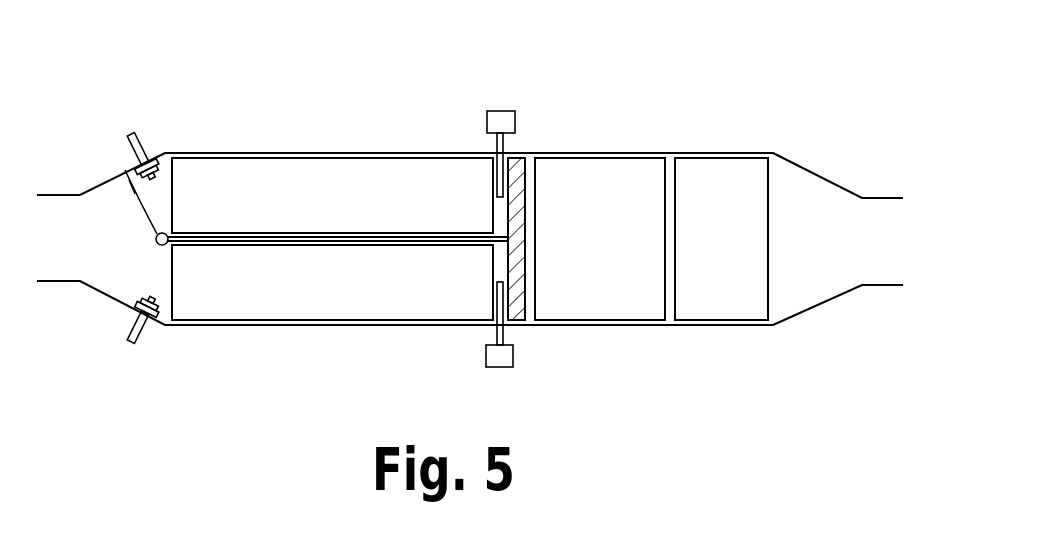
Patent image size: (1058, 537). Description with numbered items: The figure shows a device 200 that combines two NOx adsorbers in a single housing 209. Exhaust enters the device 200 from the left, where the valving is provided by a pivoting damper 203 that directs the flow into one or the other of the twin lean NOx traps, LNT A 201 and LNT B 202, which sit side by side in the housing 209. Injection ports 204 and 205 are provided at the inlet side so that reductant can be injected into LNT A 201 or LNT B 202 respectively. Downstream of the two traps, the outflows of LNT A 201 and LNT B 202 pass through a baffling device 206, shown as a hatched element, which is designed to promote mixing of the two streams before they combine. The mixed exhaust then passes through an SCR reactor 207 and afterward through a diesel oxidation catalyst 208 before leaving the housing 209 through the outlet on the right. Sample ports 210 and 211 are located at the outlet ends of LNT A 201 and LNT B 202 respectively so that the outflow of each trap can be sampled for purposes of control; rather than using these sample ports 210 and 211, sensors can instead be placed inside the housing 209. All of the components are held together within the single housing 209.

The device 200 is at (141, 58).
The lean NOx trap A 201 is at (238, 180).
The lean NOx trap B 202 is at (242, 300).
The pivoting damper 203 is at (120, 180).
The injection port 204 is at (143, 147).
The injection port 205 is at (136, 332).
The baffling device 206 is at (522, 170).
The SCR reactor 207 is at (610, 177).
The diesel oxidation catalyst 208 is at (726, 182).
The housing 209 is at (820, 178).
The sample port 210 is at (500, 170).
The sample port 211 is at (500, 313).